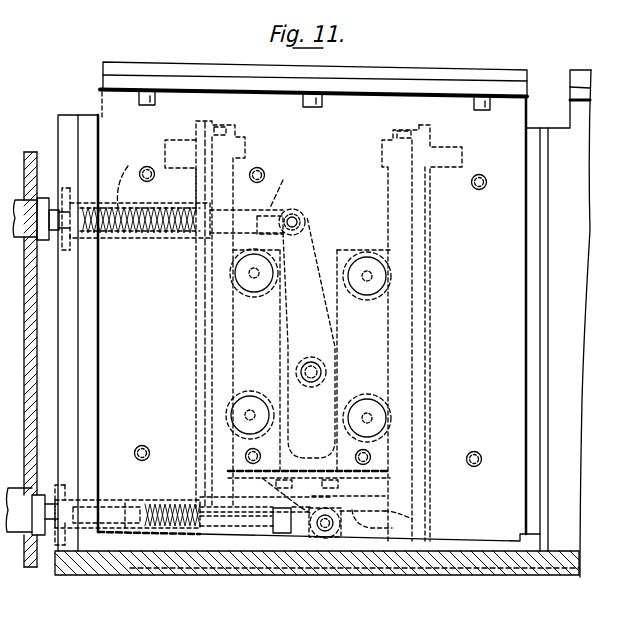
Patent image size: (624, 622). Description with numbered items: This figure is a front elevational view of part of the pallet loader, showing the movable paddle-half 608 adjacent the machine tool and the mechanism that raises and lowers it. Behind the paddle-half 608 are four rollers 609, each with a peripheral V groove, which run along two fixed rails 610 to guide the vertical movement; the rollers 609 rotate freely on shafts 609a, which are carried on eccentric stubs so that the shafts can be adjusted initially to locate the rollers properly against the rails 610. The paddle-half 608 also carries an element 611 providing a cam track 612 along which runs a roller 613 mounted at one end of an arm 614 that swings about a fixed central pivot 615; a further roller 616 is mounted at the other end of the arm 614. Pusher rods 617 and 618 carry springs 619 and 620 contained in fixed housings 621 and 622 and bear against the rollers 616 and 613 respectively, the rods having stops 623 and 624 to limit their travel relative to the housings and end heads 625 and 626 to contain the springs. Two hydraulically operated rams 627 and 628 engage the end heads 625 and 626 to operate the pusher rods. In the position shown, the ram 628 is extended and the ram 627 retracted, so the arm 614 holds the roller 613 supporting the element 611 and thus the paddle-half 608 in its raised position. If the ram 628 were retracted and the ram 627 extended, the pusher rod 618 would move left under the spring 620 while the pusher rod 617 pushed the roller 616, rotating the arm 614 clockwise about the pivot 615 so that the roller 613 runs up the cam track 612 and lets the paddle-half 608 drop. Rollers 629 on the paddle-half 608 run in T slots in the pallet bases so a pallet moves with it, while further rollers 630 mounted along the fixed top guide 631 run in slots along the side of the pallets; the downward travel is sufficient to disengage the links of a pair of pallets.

The paddle-half 608 is at (158, 360).
The rollers 609 is at (266, 296).
The shafts 609a is at (250, 274).
The rails 610 is at (222, 200).
The element 611 is at (392, 526).
The cam track 612 is at (282, 495).
The roller 613 is at (336, 532).
The arm 614 is at (330, 500).
The pivot 615 is at (310, 385).
The further roller 616 is at (305, 215).
The pusher rod 617 is at (286, 222).
The pusher rod 618 is at (252, 526).
The spring 619 is at (163, 222).
The spring 620 is at (150, 537).
The housing 621 is at (134, 172).
The housing 622 is at (147, 504).
The stop 623 is at (300, 181).
The stop 624 is at (283, 545).
The end head 625 is at (72, 247).
The end head 626 is at (128, 506).
The hydraulically operated ram 627 is at (54, 198).
The hydraulically operated ram 628 is at (50, 520).
The rollers 629 is at (261, 169).
The further rollers 630 is at (318, 108).
The fixed top guide 631 is at (502, 92).